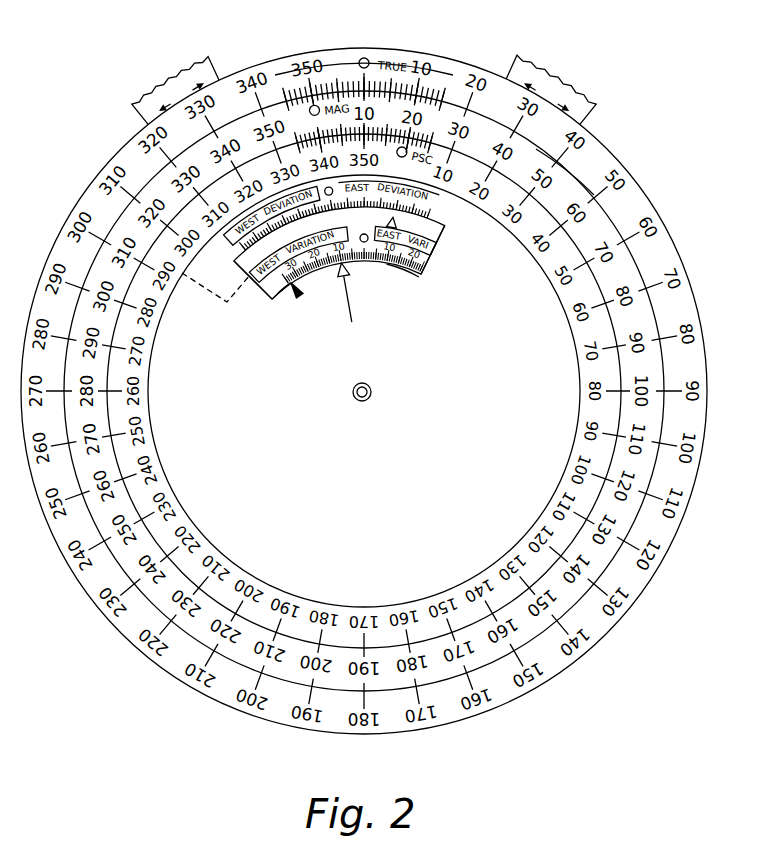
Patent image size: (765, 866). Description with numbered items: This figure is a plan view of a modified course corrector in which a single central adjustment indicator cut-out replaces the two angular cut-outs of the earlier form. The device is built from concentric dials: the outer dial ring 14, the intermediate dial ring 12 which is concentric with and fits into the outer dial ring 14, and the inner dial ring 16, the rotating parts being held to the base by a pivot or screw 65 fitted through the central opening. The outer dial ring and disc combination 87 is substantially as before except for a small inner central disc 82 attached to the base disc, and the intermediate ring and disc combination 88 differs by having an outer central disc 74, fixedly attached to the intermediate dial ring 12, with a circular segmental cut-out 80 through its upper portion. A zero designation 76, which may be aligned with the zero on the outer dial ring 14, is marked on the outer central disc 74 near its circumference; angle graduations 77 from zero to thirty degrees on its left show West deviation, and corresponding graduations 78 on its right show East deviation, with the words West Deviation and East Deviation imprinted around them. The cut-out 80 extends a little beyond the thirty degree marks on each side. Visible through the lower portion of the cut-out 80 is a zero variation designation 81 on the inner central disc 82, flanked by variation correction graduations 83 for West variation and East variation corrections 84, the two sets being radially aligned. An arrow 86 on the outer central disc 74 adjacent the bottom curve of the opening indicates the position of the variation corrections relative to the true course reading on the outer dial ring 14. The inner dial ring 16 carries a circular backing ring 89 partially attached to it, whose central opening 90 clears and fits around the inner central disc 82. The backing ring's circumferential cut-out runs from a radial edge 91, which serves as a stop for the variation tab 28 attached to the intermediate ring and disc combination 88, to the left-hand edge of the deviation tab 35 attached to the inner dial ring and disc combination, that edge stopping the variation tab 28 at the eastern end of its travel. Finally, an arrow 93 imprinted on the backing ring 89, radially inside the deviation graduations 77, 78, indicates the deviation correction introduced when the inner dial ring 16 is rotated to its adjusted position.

The intermediate dial ring 12 is at (690, 412).
The outer dial ring 14 is at (448, 68).
The inner dial ring 16 is at (582, 410).
The variation tab 28 is at (207, 58).
The deviation tab 35 is at (595, 101).
The pivot or screw 65 is at (372, 395).
The outer central disc 74 is at (433, 543).
The zero designation 76 is at (333, 217).
The angle graduations 77 is at (250, 268).
The graduations 78 is at (433, 217).
The circular segmental cut-out 80 is at (273, 289).
The zero variation designation 81 is at (366, 246).
The inner central disc 82 is at (290, 297).
The variation correction graduations 83 is at (305, 272).
The East variation corrections 84 is at (403, 268).
The arrow 86 is at (359, 301).
The outer dial ring and disc combination 87 is at (338, 54).
The intermediate ring and disc combination 88 is at (562, 177).
The circular backing ring 89 is at (255, 270).
The central opening 90 is at (386, 222).
The radial edge 91 is at (202, 292).
The arrow 93 is at (444, 240).